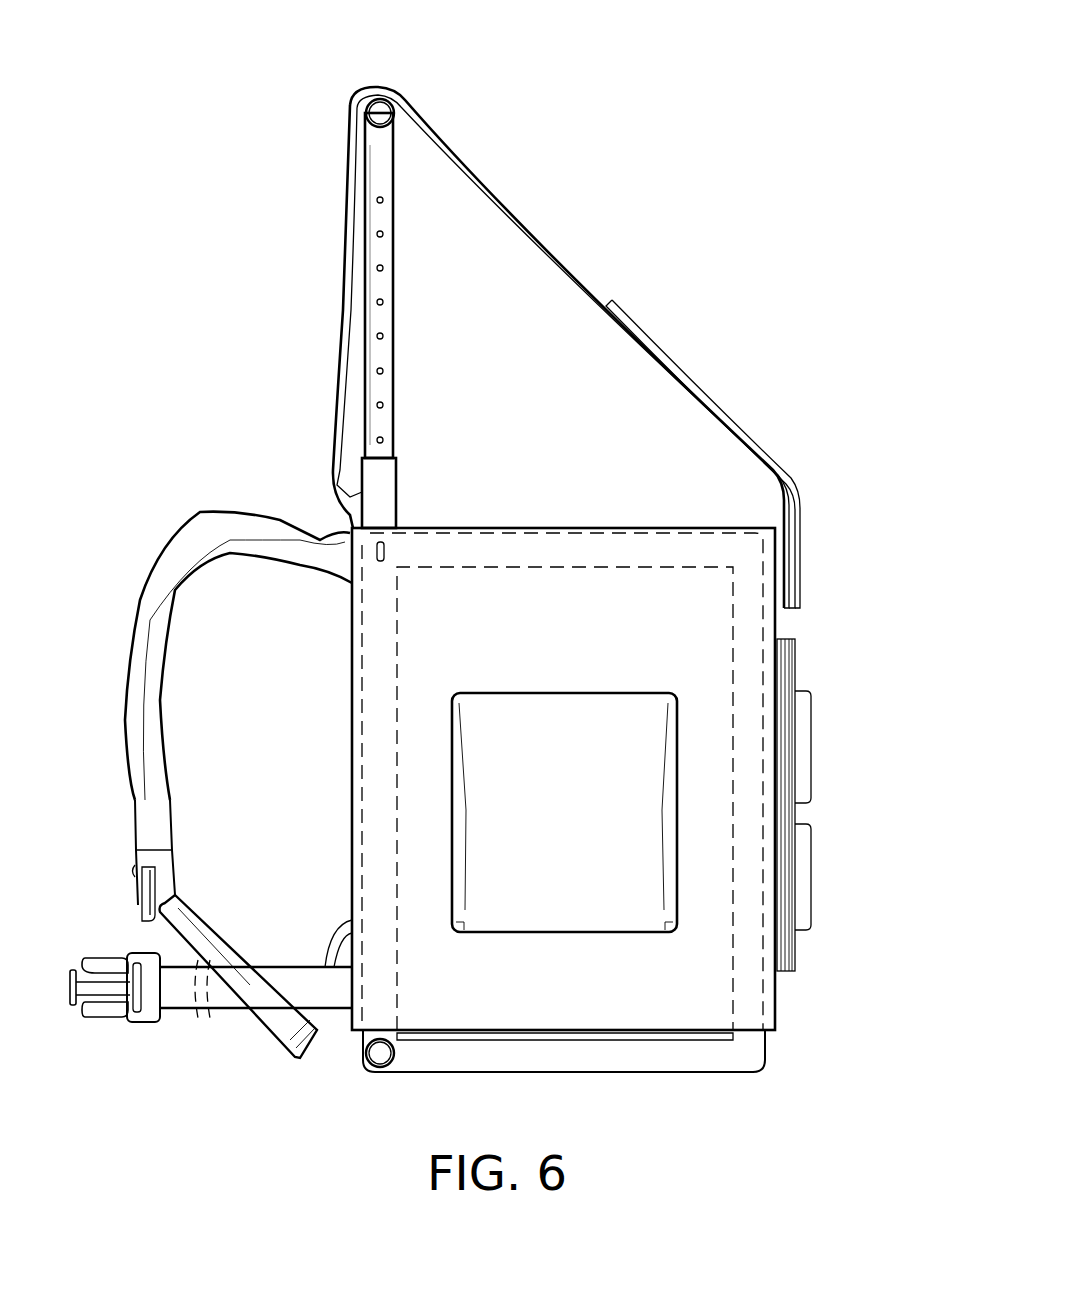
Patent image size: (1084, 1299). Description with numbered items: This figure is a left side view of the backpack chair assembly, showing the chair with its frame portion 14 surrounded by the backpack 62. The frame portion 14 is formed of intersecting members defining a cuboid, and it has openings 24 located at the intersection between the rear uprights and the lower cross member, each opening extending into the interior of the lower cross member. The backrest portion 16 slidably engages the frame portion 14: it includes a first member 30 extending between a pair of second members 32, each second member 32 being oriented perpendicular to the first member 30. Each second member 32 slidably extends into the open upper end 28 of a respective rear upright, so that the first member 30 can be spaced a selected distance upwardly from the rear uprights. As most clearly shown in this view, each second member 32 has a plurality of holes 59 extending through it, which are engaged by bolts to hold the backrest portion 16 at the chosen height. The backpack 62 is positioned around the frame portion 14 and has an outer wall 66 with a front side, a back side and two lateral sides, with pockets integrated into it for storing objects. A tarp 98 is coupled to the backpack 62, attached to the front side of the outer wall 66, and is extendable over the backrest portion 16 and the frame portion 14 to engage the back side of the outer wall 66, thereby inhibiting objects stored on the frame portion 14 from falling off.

The frame portion 14 is at (765, 1075).
The backrest portion 16 is at (362, 232).
The openings 24 is at (378, 1063).
The upper end 28 is at (378, 455).
The first member 30 is at (380, 99).
The second members 32 is at (365, 300).
The holes 59 is at (381, 236).
The backpack 62 is at (710, 637).
The outer wall 66 is at (668, 1005).
The tarp 98 is at (550, 252).